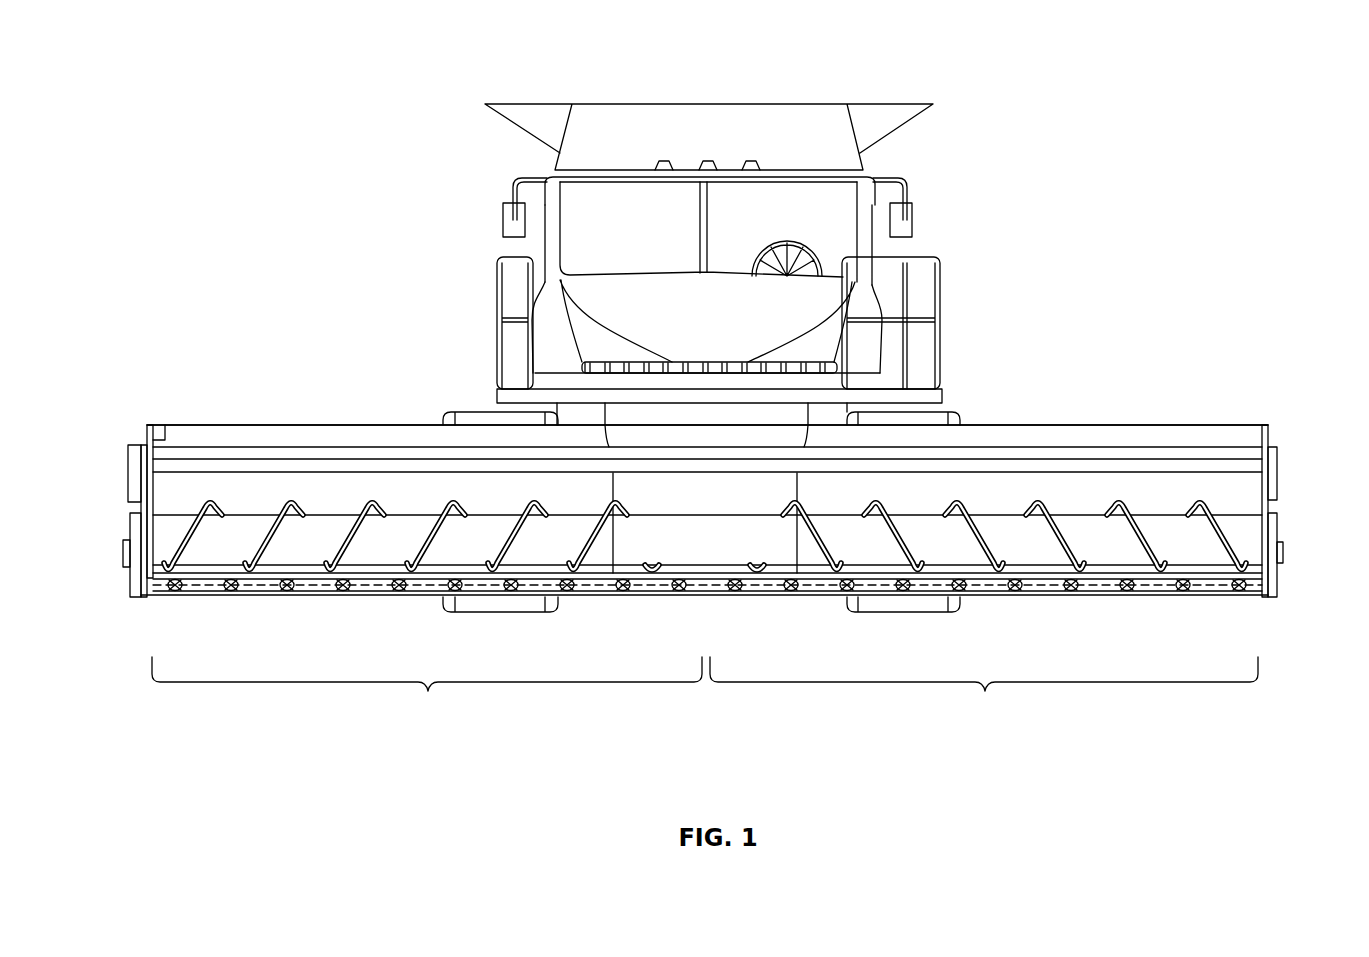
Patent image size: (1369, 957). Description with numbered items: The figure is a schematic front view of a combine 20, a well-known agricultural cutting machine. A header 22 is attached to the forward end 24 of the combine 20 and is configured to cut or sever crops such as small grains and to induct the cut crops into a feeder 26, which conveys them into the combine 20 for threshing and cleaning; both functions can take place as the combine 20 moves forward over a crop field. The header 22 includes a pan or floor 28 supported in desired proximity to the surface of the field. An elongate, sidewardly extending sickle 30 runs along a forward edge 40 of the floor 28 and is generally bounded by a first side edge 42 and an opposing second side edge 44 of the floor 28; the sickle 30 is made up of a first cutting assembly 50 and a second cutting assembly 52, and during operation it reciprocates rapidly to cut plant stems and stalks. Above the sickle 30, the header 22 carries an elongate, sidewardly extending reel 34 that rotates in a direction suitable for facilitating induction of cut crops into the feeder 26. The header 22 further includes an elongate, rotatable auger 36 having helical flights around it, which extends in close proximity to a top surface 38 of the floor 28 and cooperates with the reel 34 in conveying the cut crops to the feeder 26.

The combine 20 is at (306, 106).
The header 22 is at (116, 470).
The forward end 24 is at (497, 393).
The feeder 26 is at (810, 417).
The floor 28 is at (300, 572).
The sickle 30 is at (1125, 587).
The reel 34 is at (1273, 435).
The auger 36 is at (1222, 515).
The top surface 38 is at (220, 575).
The forward edge 40 is at (370, 575).
The first side edge 42 is at (135, 568).
The second side edge 44 is at (1285, 568).
The first cutting assembly 50 is at (984, 693).
The second cutting assembly 52 is at (427, 693).